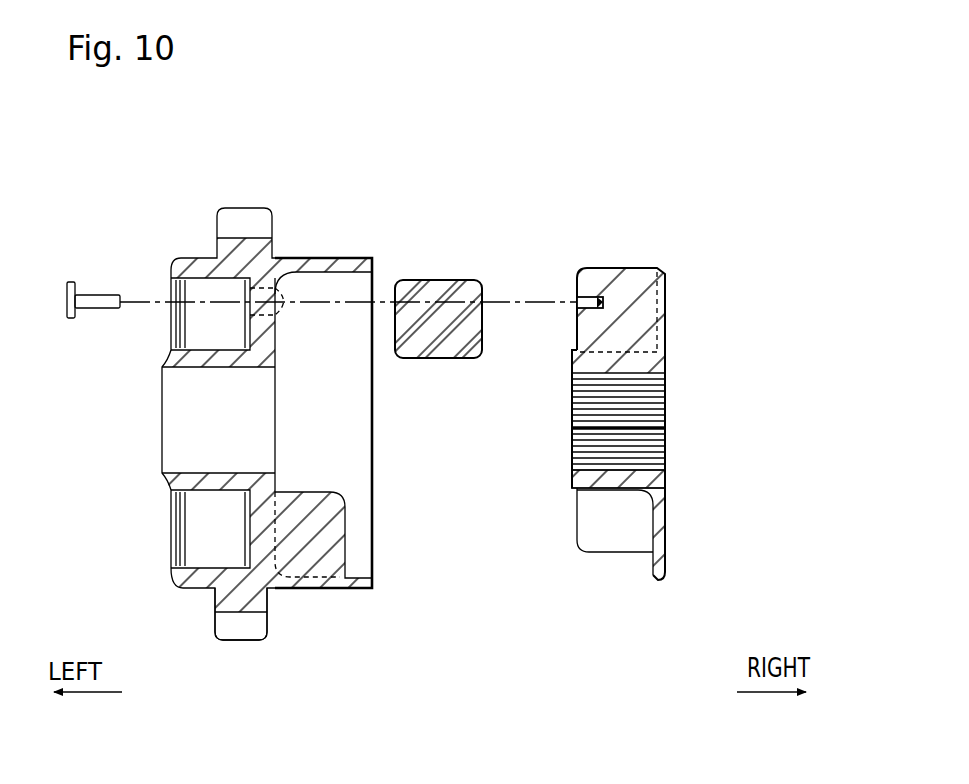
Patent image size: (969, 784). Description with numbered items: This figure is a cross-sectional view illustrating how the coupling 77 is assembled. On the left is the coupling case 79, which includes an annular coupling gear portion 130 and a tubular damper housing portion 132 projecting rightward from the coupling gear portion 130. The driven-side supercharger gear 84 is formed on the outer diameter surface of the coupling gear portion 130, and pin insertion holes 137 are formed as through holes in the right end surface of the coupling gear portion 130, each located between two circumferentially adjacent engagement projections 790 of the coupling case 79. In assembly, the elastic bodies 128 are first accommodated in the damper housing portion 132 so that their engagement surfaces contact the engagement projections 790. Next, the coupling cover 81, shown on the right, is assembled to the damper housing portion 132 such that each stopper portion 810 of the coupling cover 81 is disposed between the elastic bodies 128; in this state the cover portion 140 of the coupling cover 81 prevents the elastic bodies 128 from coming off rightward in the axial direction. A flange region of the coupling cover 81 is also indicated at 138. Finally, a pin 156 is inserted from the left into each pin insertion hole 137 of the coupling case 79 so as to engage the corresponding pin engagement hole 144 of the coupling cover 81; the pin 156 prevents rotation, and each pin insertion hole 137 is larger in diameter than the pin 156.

The coupling 77 is at (649, 146).
The coupling case 79 is at (312, 153).
The coupling gear portion 130 is at (185, 264).
The damper housing portion 132 is at (315, 262).
The pin insertion hole 137 is at (283, 309).
The engagement projection 790 is at (323, 556).
The driven-side supercharger gear 84 is at (245, 632).
The pin 156 is at (94, 292).
The elastic body 128 is at (428, 278).
The coupling cover 81 is at (683, 652).
The stopper portion 810 is at (627, 288).
The pin engagement hole 144 is at (576, 306).
The flange 138 is at (598, 479).
The cover portion 140 is at (659, 580).